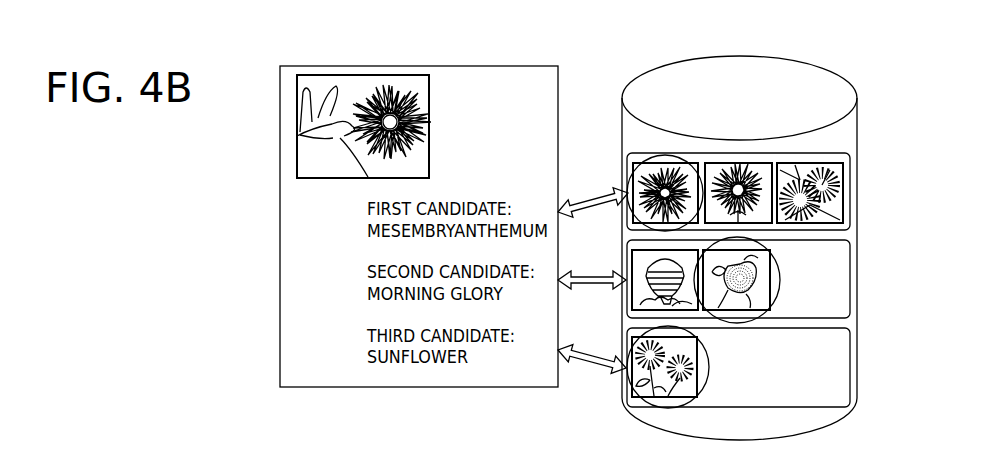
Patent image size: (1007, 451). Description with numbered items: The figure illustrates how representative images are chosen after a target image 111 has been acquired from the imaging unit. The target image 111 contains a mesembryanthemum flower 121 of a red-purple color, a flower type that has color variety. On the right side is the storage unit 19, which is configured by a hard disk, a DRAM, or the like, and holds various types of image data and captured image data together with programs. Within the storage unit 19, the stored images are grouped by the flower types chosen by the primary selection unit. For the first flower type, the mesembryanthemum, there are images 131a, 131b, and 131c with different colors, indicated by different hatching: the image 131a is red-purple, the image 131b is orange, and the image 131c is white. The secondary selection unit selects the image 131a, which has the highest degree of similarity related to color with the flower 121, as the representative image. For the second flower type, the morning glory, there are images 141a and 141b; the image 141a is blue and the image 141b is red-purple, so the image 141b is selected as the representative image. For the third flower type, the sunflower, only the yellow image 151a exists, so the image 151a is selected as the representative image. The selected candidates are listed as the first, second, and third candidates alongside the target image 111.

The flower database 19 is at (741, 57).
The display screen 111 is at (297, 136).
The captured image 121 is at (372, 84).
The first candidate flower image 131a is at (663, 157).
The first candidate flower image 131b is at (735, 157).
The first candidate flower image 131c is at (805, 157).
The second candidate image 141a is at (686, 311).
The second candidate flower image 141b is at (780, 281).
The third candidate flower image 151a is at (710, 370).